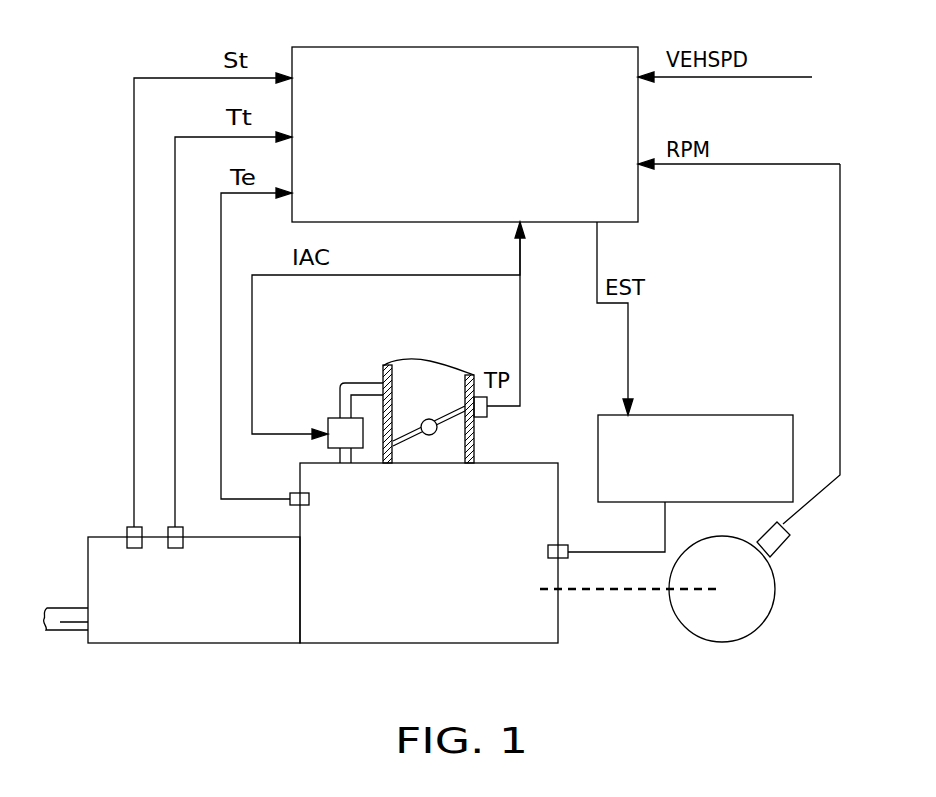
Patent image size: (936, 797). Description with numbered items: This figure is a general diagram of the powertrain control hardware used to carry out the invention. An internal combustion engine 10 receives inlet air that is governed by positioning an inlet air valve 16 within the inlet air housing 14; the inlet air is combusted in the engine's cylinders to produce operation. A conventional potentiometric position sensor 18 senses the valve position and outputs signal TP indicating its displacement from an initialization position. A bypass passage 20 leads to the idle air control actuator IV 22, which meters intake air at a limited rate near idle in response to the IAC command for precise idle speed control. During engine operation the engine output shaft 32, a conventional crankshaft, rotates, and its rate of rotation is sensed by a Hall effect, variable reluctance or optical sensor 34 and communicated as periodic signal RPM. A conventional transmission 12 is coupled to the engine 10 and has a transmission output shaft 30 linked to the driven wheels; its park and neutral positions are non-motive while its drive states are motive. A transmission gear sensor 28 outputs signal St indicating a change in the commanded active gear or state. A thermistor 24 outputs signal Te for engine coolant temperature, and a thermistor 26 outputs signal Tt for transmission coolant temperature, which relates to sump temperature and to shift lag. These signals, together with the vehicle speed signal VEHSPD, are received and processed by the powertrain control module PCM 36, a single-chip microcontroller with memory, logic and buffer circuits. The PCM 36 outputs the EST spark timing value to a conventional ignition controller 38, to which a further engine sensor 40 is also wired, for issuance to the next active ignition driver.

The internal combustion engine 10 is at (365, 643).
The transmission 12 is at (197, 643).
The throttle body / air intake 14 is at (412, 360).
The inlet air valve 16 is at (446, 410).
The potentiometric position sensor 18 is at (486, 418).
The idle air bypass passage 20 is at (355, 382).
The idle air control actuator 22 is at (327, 417).
The thermistor 24 is at (293, 493).
The thermistor 26 is at (184, 530).
The transmission gear sensor 28 is at (126, 530).
The transmission output shaft 30 is at (68, 629).
The engine output shaft 32 is at (753, 620).
The engine speed sensor 34 is at (782, 542).
The powertrain control module 36 is at (533, 47).
The ignition controller 38 is at (733, 415).
The crankshaft position sensor 40 is at (565, 545).